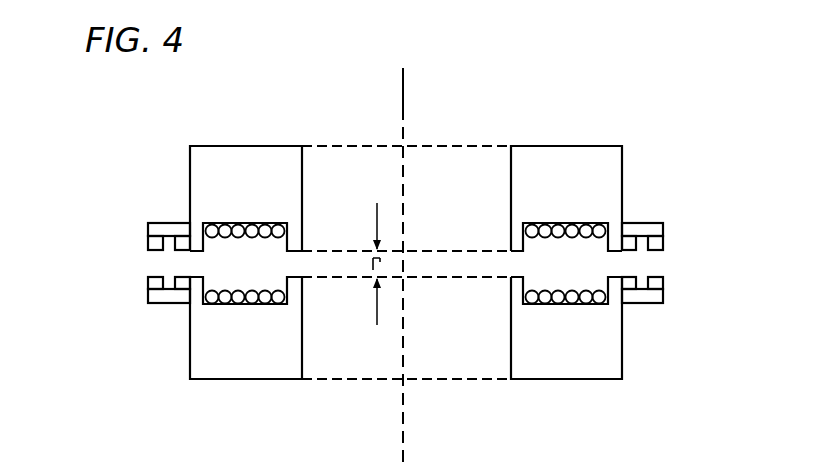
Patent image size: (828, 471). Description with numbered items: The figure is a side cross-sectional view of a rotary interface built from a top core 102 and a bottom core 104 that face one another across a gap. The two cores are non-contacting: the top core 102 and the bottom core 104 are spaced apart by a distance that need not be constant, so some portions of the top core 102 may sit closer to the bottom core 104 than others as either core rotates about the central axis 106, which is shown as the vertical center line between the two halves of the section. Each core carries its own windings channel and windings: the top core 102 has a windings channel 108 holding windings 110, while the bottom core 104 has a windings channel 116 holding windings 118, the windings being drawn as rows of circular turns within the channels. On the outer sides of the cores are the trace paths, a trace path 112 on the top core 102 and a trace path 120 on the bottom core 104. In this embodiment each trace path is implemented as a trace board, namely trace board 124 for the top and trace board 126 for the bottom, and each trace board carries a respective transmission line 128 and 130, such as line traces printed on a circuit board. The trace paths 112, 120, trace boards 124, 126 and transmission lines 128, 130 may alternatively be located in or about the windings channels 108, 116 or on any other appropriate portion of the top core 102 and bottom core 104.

The top core 102 is at (226, 160).
The bottom core 104 is at (237, 365).
The central axis 106 is at (405, 90).
The windings channel 108 is at (260, 227).
The windings 110 is at (287, 232).
The trace path 112 is at (406, 220).
The windings channel 116 is at (263, 304).
The windings 118 is at (238, 304).
The trace path 120 is at (406, 314).
The trace board 124 is at (170, 223).
The trace board 126 is at (163, 304).
The transmission line 128 is at (147, 243).
The transmission line 130 is at (147, 279).